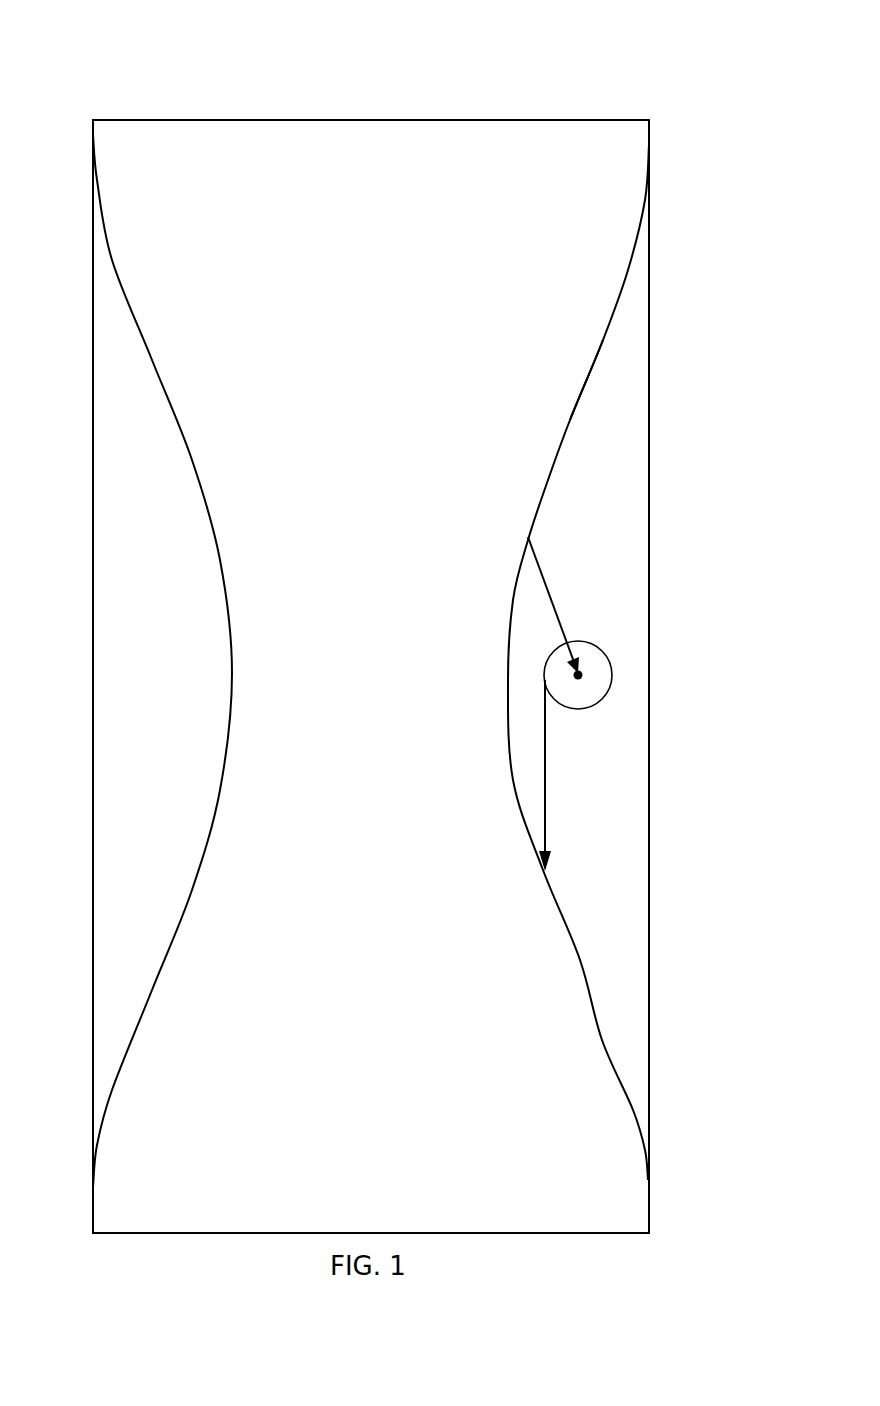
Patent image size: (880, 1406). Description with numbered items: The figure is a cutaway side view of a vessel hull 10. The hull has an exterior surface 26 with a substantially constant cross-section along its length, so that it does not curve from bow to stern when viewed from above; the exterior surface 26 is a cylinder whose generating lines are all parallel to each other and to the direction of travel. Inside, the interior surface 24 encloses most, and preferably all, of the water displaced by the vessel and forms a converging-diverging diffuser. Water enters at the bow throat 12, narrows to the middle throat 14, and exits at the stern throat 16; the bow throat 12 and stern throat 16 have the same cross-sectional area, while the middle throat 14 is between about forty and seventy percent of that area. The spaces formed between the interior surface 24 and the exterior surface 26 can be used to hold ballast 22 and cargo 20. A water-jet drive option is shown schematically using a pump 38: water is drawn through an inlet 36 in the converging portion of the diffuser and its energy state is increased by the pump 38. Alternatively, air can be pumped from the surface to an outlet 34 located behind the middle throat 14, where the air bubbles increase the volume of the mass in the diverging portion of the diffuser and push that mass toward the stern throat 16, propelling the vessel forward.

The vessel hull 10 is at (342, 621).
The bow throat 12 is at (388, 208).
The middle throat 14 is at (386, 691).
The stern throat 16 is at (385, 1150).
The cargo 20 is at (615, 488).
The ballast 22 is at (171, 667).
The interior surface 24 is at (623, 288).
The exterior surface 26 is at (650, 471).
The outlet 34 is at (545, 775).
The inlet 36 is at (552, 597).
The pump 38 is at (597, 668).